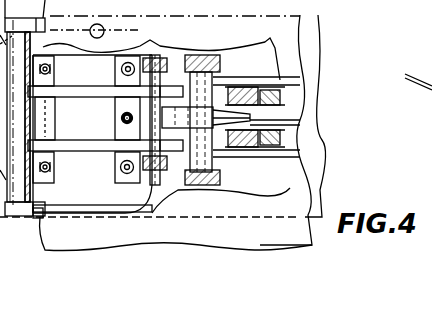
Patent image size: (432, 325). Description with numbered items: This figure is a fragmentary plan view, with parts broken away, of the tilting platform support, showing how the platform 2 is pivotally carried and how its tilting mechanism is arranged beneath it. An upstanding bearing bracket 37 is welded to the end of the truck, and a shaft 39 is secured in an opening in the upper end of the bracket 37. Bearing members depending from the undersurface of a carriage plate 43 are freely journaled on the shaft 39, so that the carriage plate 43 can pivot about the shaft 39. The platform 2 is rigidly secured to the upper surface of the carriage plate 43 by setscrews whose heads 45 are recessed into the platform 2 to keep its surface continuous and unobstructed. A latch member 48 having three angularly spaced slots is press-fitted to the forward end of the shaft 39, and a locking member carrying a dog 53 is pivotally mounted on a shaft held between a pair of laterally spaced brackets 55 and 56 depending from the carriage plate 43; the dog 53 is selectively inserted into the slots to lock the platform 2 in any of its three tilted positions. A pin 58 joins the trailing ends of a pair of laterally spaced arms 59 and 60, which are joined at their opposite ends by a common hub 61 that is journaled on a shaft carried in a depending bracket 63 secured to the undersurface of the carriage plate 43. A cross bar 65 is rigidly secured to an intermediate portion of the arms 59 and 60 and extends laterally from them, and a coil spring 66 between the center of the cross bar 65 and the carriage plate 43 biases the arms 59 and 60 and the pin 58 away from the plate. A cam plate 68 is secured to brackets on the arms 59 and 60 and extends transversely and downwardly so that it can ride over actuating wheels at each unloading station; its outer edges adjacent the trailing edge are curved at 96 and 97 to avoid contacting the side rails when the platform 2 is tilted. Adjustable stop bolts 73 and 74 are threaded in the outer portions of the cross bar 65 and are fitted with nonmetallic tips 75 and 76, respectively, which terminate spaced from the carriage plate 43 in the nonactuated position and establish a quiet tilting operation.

The platform 2 is at (297, 188).
The bearing bracket 37 is at (278, 140).
The shaft 39 is at (282, 115).
The carriage plate 43 is at (316, 163).
The head 45 is at (100, 12).
The latch member 48 is at (280, 150).
The dog 53 is at (226, 130).
The bracket 55 is at (210, 186).
The bracket 56 is at (222, 62).
The pin 58 is at (170, 160).
The arm 59 is at (85, 142).
The arm 60 is at (110, 95).
The hub 61 is at (20, 118).
The depending bracket 63 is at (24, 216).
The cross bar 65 is at (133, 186).
The coil spring 66 is at (121, 118).
The cam plate 68 is at (78, 205).
The stop bolt 73 is at (114, 181).
The stop bolt 74 is at (120, 67).
The nonmetallic tip 75 is at (120, 167).
The nonmetallic tip 76 is at (104, 50).
The curved edge 96 is at (158, 47).
The curved edge 97 is at (148, 212).